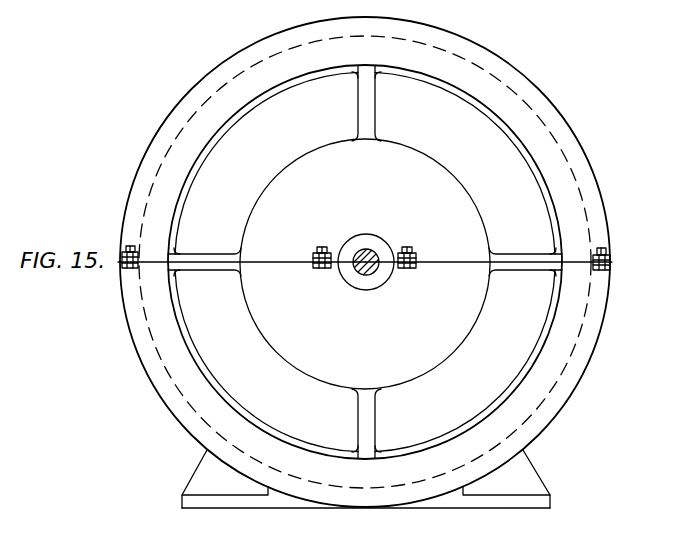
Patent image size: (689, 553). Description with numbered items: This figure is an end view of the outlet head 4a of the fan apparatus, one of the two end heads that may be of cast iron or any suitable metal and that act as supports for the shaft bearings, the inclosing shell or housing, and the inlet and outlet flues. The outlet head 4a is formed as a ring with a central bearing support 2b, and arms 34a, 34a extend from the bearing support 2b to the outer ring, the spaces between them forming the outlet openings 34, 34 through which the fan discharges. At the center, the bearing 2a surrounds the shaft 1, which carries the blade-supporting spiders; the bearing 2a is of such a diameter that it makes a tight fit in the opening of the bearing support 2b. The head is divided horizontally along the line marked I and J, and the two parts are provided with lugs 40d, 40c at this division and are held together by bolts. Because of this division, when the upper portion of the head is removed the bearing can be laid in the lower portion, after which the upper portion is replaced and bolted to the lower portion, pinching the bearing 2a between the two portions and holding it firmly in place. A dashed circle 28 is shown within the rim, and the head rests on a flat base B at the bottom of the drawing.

The outlet head 4a is at (182, 117).
The dashed circumferential line 28 is at (568, 153).
The outlet openings 34 is at (365, 262).
The arms 34a is at (364, 106).
The bearing 2a is at (380, 235).
The shaft 1 is at (359, 268).
The bearing support 2b is at (365, 264).
The lugs 40c is at (318, 256).
The lugs 40d is at (630, 252).
The section line end I is at (121, 256).
The section line end J is at (611, 263).
The base B is at (253, 500).